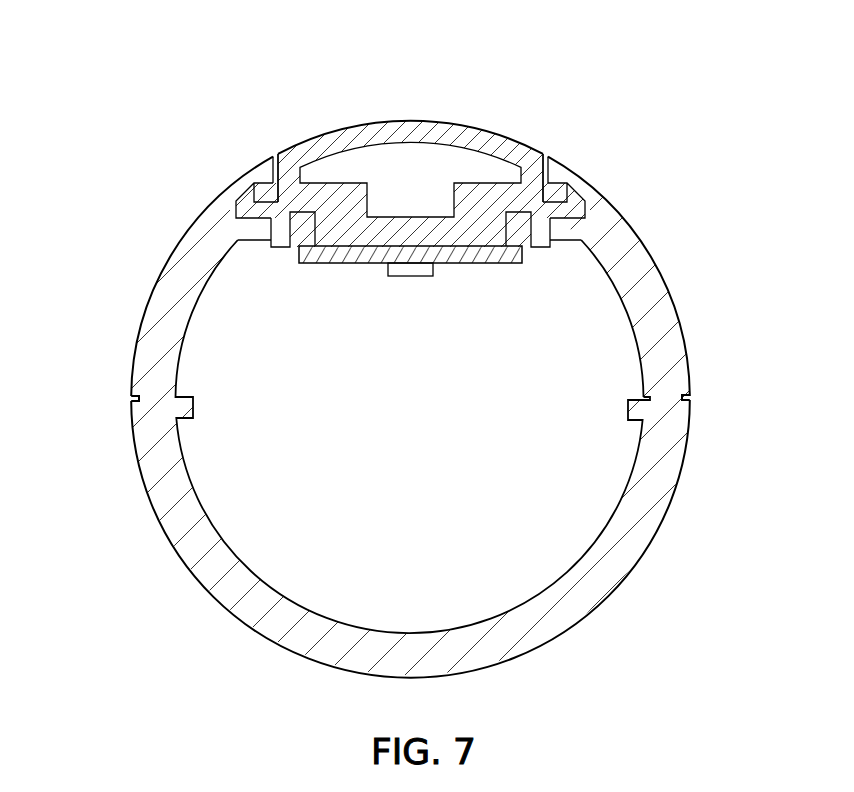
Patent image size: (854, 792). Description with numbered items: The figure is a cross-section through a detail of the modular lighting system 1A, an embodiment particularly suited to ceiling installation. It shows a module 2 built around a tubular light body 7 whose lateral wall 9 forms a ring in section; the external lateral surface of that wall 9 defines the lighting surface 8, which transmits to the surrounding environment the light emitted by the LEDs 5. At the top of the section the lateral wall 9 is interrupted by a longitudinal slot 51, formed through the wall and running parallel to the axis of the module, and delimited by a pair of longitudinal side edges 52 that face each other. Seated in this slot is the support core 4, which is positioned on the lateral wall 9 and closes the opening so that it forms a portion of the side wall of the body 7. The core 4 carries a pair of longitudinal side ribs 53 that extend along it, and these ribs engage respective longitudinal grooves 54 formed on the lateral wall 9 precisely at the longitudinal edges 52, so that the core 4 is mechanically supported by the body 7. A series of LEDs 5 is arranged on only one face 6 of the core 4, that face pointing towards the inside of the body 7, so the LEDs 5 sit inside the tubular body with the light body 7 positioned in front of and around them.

The modular lighting system 1A is at (738, 160).
The module 2 is at (637, 547).
The support core 4 is at (498, 148).
The LEDs 5 is at (418, 272).
The face 6 is at (340, 248).
The light body 7 is at (150, 480).
The lighting surface 8 is at (218, 602).
The lateral wall 9 is at (668, 348).
The longitudinal slot 51 is at (548, 186).
The longitudinal side edges 52 is at (275, 176).
The longitudinal side ribs 53 is at (237, 207).
The longitudinal grooves 54 is at (585, 205).